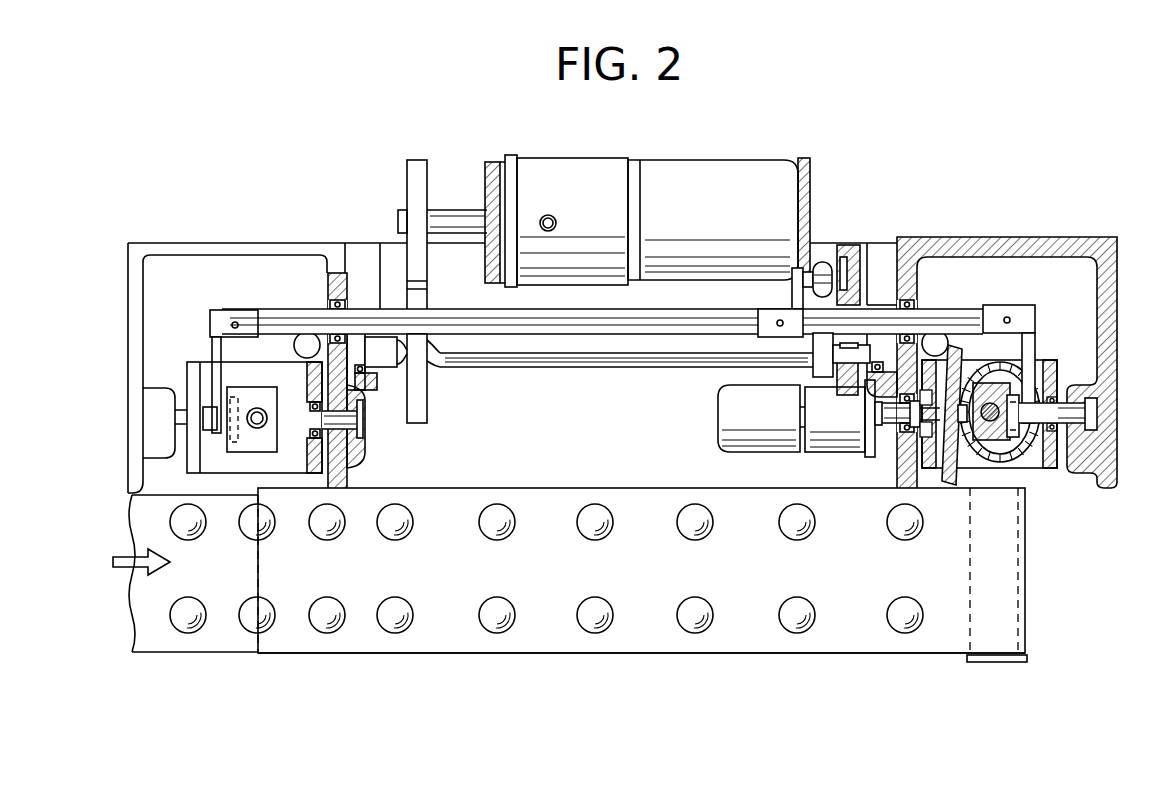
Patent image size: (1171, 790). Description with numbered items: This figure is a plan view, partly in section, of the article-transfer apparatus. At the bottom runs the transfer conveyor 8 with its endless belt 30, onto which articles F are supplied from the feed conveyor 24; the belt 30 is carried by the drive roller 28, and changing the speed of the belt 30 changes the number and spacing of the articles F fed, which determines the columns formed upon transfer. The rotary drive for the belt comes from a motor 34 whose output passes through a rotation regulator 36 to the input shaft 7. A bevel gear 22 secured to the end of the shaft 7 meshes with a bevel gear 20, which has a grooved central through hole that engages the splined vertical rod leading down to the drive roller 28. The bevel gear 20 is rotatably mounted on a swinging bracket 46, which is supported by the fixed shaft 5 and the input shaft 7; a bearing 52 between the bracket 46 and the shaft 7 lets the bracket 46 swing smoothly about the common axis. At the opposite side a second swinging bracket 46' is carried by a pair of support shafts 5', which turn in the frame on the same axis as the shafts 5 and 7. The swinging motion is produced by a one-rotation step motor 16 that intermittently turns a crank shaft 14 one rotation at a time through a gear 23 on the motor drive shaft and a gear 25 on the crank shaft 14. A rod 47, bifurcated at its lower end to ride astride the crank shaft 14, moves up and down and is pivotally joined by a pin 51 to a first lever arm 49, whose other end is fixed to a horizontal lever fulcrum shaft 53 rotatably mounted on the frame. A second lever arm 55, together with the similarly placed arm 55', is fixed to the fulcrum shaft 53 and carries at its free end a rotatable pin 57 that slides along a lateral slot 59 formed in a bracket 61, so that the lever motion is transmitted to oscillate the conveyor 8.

The fixed shaft 5 is at (1081, 414).
The support shaft 5' is at (367, 421).
The input shaft 7 is at (907, 413).
The transfer conveyor 8 is at (635, 660).
The crank shaft 14 is at (522, 348).
The one-rotation step motor 16 is at (604, 221).
The bevel gear 20 is at (1012, 370).
The bevel gear 22 is at (960, 484).
The gear 23 is at (415, 170).
The feed conveyor 24 is at (188, 660).
The gear 25 is at (420, 406).
The drive roller 28 is at (993, 663).
The endless belt 30 is at (542, 655).
The motor 34 is at (761, 418).
The rotation regulator 36 is at (840, 418).
The swinging bracket 46 is at (1068, 394).
The swinging bracket 46' is at (254, 416).
The rod 47 is at (820, 372).
The first lever arm 49 is at (793, 285).
The pin 51 is at (813, 268).
The bearing 52 is at (935, 463).
The lever fulcrum shaft 53 is at (637, 316).
The second lever arm 55 is at (1038, 352).
The arm 55' is at (204, 371).
The rotatable pin 57 is at (998, 388).
The lateral slot 59 is at (1013, 437).
The bracket 61 is at (992, 443).
The articles F is at (495, 633).